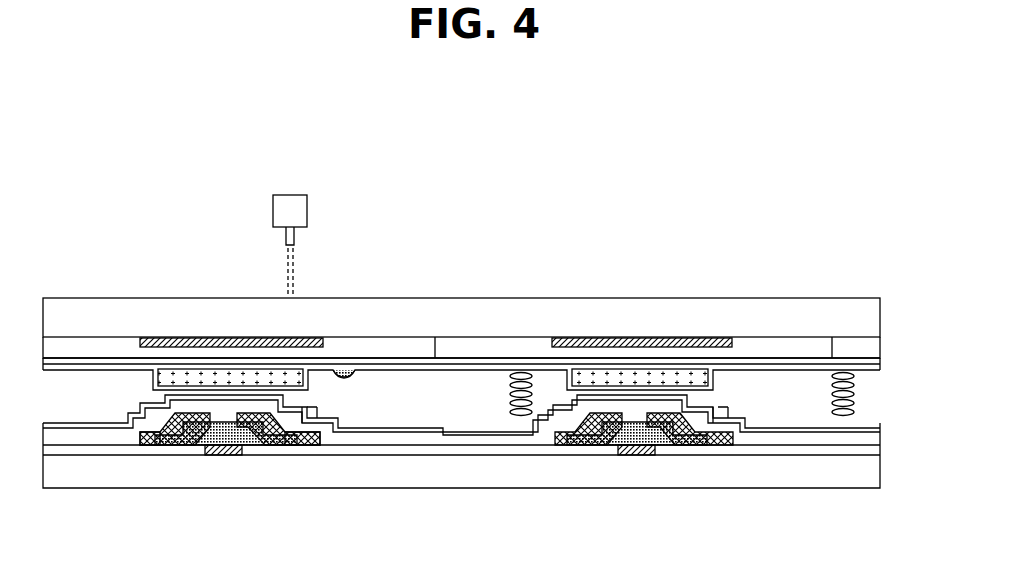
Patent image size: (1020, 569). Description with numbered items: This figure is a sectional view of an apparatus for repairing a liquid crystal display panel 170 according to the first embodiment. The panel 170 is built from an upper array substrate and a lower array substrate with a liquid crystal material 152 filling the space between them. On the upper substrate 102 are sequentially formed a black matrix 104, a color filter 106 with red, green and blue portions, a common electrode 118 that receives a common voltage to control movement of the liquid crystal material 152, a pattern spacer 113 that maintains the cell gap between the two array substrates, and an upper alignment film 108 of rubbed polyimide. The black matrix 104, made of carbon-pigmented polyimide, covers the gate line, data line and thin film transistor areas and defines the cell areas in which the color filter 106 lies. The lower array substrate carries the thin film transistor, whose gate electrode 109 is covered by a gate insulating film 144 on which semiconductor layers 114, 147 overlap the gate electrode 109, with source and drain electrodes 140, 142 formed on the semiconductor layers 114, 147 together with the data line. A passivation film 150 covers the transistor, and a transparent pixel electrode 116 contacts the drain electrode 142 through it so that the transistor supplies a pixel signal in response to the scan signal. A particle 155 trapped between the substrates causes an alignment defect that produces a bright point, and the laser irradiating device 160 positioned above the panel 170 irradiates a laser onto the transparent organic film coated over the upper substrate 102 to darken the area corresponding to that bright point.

The upper substrate 102 is at (880, 310).
The black matrix 104 is at (600, 337).
The color filter 106 is at (880, 340).
The upper alignment film 108 is at (880, 370).
The gate electrode 109 is at (224, 458).
The pattern spacer 113 is at (650, 375).
The semiconductor layer 114 is at (167, 447).
The pixel electrode 116 is at (340, 442).
The common electrode 118 is at (880, 362).
The source electrode 140 is at (190, 447).
The drain electrode 142 is at (295, 447).
The gate insulating film 144 is at (440, 453).
The semiconductor layer 147 is at (258, 447).
The passivation film 150 is at (378, 442).
The liquid crystal material 152 is at (832, 390).
The particle 155 is at (347, 379).
The laser irradiating device 160 is at (307, 211).
The liquid crystal display panel 170 is at (784, 258).